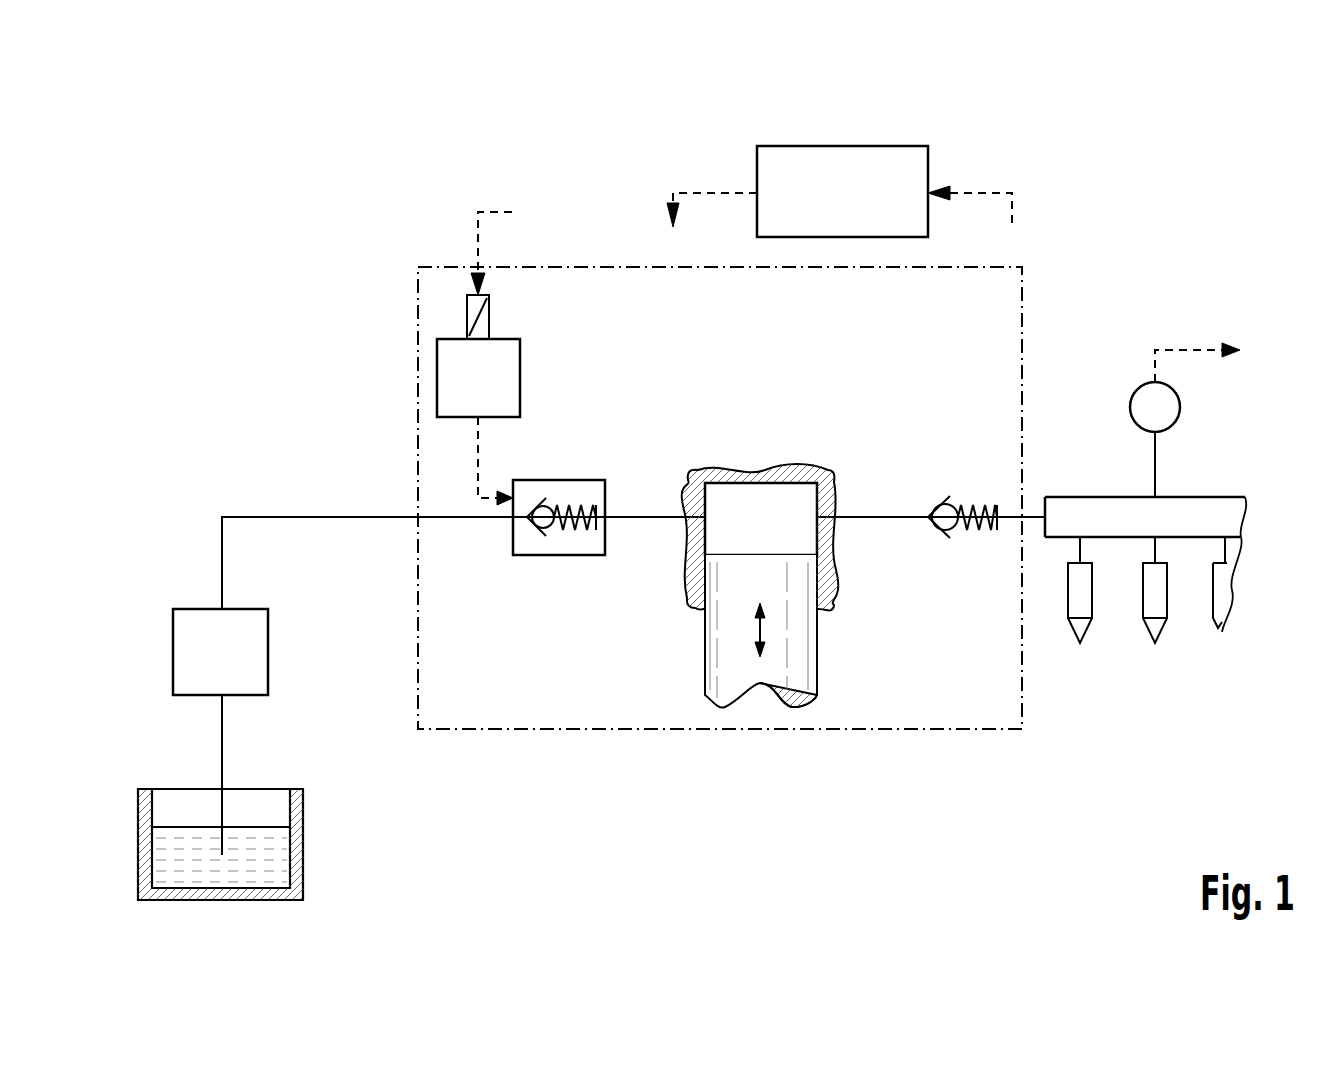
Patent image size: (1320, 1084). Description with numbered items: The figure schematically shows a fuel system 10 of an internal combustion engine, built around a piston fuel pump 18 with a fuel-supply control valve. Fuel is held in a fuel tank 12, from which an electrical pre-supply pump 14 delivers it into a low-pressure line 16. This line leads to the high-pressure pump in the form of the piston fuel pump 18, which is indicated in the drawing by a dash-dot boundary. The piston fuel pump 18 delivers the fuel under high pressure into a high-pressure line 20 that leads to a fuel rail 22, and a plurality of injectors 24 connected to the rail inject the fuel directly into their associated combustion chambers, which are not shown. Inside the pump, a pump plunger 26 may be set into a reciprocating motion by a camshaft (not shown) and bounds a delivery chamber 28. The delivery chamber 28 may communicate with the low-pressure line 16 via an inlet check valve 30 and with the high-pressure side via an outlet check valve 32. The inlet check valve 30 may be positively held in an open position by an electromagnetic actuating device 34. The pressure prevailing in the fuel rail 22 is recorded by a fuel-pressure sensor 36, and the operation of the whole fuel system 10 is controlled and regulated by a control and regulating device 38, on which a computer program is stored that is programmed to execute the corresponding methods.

The fuel system 10 is at (150, 183).
The fuel tank 12 is at (150, 850).
The electrical pre-supply pump 14 is at (173, 650).
The low-pressure line 16 is at (306, 517).
The piston fuel pump 18 is at (560, 731).
The high-pressure line 20 is at (1035, 515).
The fuel rail 22 is at (1202, 497).
The injectors 24 is at (1082, 643).
The pump plunger 26 is at (796, 665).
The delivery chamber 28 is at (758, 490).
The inlet check valve 30 is at (558, 480).
The outlet check valve 32 is at (940, 500).
The electromagnetic actuating device 34 is at (520, 378).
The fuel-pressure sensor 36 is at (1180, 407).
The control and regulating device 38 is at (842, 146).